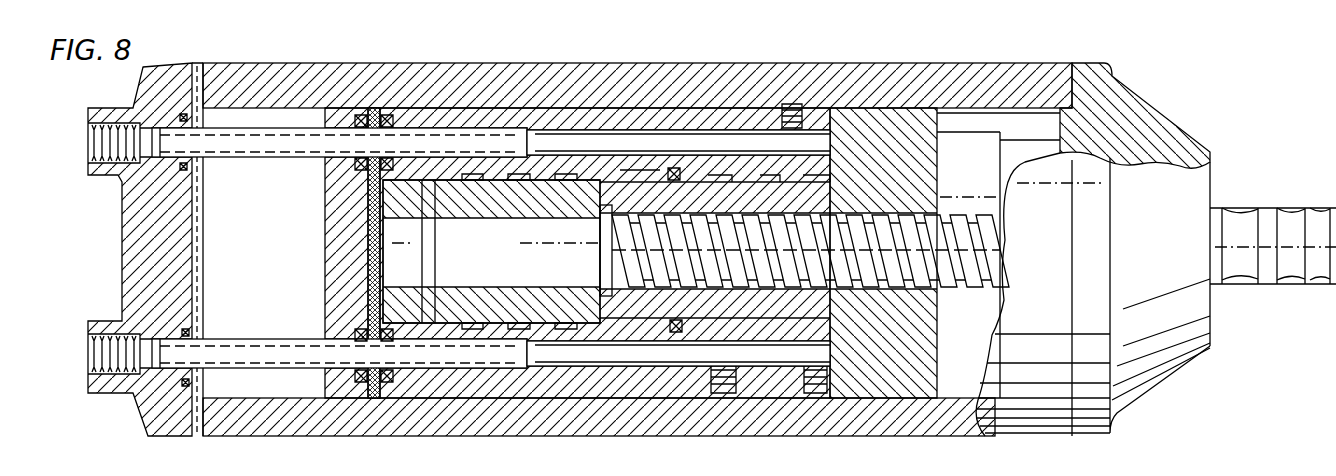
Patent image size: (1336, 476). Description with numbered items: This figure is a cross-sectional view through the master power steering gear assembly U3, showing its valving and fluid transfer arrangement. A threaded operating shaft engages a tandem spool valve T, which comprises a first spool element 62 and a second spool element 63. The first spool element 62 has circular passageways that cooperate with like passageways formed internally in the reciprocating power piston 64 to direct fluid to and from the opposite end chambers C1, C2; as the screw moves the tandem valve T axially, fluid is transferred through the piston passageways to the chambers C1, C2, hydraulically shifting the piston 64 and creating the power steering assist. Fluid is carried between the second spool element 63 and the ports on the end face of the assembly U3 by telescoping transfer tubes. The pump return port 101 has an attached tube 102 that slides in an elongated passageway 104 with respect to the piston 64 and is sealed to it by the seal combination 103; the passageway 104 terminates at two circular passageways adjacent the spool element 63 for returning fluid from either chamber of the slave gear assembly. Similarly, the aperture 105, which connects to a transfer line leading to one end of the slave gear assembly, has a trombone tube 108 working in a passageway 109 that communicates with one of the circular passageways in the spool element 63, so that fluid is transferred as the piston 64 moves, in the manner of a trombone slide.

The first spool element 62 is at (468, 203).
The second spool element 63 is at (840, 192).
The reciprocating power piston 64 is at (340, 269).
The pump return port 101 is at (88, 361).
The tube 102 is at (227, 351).
The seal combination 103 is at (397, 373).
The elongated passageway 104 is at (623, 358).
The aperture 105 is at (100, 160).
The trombone tube 108 is at (227, 143).
The passageway 109 is at (610, 137).
The tandem spool valve T is at (640, 170).
The end chamber C1 is at (992, 190).
The end chamber C2 is at (267, 243).
The master power steering gear assembly U3 is at (1163, 400).